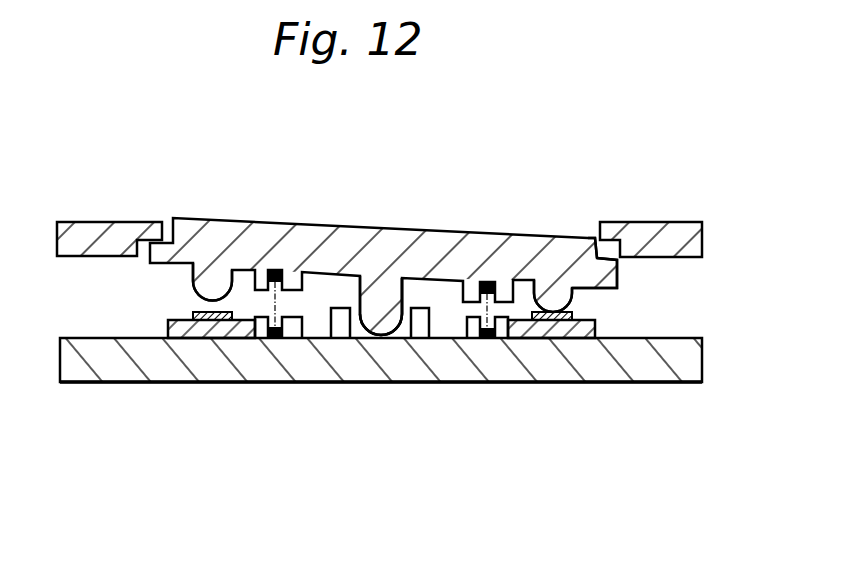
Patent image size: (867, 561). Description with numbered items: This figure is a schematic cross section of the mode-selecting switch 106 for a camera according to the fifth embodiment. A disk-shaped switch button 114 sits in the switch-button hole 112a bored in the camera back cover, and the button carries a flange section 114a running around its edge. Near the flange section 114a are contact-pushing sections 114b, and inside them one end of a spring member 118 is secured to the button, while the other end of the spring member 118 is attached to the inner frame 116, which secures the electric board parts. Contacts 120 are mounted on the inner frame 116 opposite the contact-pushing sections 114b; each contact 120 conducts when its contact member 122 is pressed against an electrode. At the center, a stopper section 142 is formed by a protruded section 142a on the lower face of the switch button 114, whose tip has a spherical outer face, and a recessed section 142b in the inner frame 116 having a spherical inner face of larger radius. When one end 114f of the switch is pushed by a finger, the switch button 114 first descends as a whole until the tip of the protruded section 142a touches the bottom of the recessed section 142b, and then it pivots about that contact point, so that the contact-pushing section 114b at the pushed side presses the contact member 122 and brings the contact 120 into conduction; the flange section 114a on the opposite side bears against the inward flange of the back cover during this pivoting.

The mode-selecting switch 106 is at (388, 216).
The switch-button hole 112a is at (597, 227).
The switch button 114 is at (544, 242).
The flange section 114a is at (614, 262).
The contact-pushing section 114b is at (207, 286).
The one end of the mode-selecting switch 114f is at (592, 237).
The inner frame 116 is at (507, 384).
The spring member 118 is at (278, 342).
The contact 120 is at (168, 327).
The contact member 122 is at (193, 310).
The stopper section 142 is at (337, 292).
The protruded section 142a is at (402, 285).
The recessed section 142b is at (390, 336).